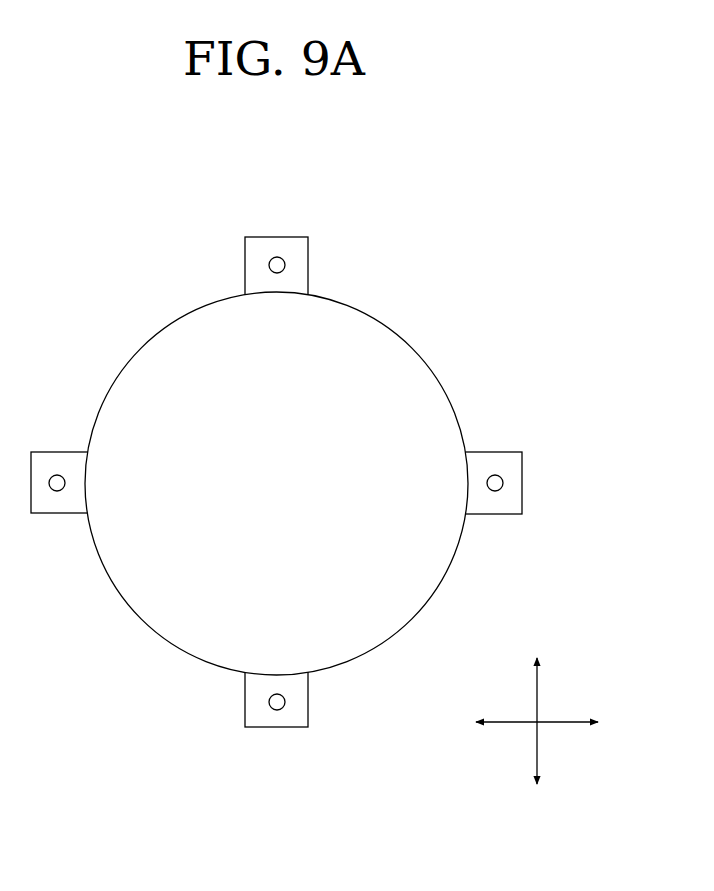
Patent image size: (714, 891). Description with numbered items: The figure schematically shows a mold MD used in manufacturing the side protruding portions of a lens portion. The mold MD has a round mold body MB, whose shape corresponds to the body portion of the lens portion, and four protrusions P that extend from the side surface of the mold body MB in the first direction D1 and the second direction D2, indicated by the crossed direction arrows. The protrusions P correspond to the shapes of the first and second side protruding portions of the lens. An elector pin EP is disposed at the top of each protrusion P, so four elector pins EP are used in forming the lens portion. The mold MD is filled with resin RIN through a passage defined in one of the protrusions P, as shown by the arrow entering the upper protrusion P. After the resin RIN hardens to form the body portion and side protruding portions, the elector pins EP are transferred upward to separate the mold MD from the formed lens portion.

The mold MD is at (431, 204).
The mold body MB is at (415, 348).
The protrusion P is at (495, 462).
The elector pin EP is at (503, 481).
The resin RIN is at (277, 230).
The first direction D1 is at (551, 723).
The second direction D2 is at (537, 735).